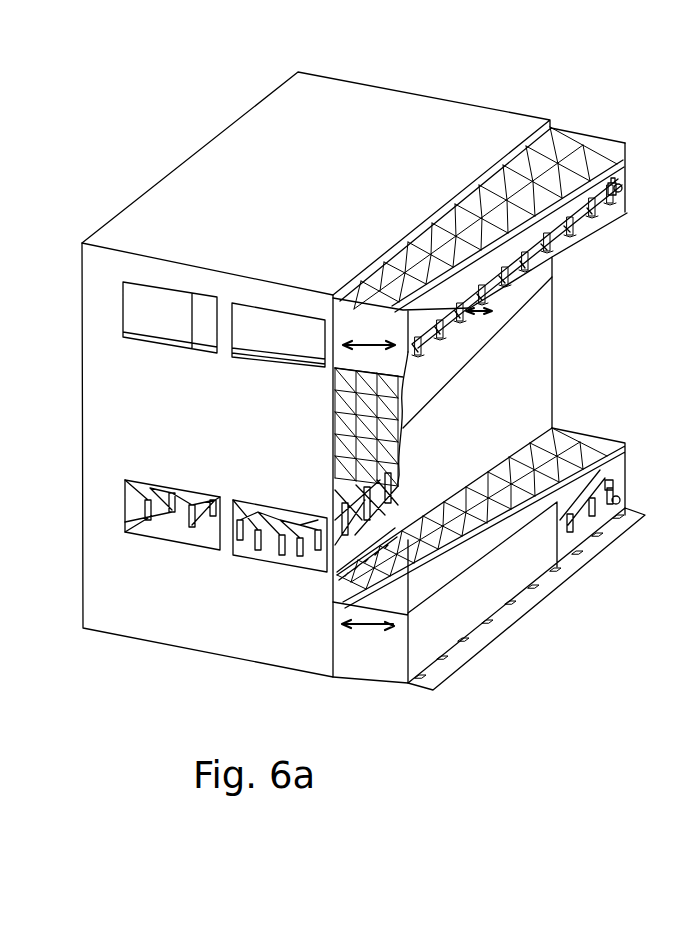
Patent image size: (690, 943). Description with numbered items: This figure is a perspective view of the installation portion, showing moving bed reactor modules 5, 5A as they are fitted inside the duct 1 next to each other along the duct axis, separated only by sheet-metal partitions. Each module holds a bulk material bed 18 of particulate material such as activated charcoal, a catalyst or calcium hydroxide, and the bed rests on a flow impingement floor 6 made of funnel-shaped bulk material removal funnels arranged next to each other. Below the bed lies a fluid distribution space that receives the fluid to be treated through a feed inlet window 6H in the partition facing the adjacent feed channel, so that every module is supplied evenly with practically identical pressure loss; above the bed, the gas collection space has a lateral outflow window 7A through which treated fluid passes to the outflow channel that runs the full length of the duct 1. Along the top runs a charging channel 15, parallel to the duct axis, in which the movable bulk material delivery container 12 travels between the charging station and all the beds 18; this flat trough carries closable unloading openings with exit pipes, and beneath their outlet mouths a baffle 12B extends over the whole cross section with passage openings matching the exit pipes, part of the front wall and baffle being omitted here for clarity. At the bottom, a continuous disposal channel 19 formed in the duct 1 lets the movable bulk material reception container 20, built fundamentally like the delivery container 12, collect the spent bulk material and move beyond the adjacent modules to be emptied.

The duct 1 is at (443, 97).
The moving bed reactor module 5 is at (237, 191).
The moving bed reactor module 5A is at (528, 400).
The flow impingement floor 6 is at (320, 507).
The feed inlet window 6H is at (173, 528).
The lateral outflow window 7A is at (155, 318).
The bulk material delivery container 12 is at (626, 177).
The baffle 12B is at (567, 243).
The charging channel 15 is at (527, 152).
The bulk material bed 18 is at (377, 425).
The disposal channel 19 is at (340, 641).
The bulk material reception container 20 is at (628, 458).